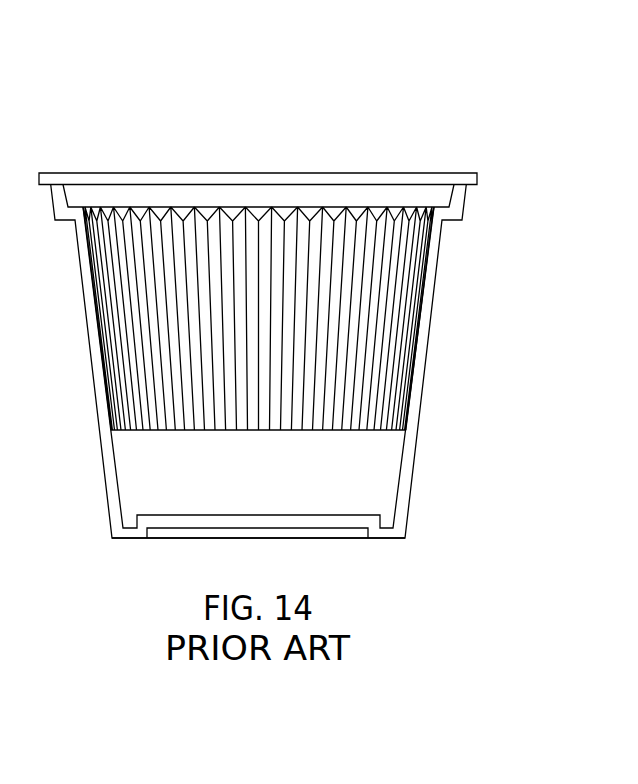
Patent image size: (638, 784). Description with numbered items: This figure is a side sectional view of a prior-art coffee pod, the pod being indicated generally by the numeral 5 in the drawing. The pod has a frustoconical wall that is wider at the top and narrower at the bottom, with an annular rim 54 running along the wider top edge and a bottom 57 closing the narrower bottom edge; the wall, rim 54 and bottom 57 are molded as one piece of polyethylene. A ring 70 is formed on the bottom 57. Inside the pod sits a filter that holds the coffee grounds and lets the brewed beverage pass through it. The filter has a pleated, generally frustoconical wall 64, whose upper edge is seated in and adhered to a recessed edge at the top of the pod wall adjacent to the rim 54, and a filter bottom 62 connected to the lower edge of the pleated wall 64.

The prior art capsule 5 is at (477, 102).
The annular rim 54 is at (478, 181).
The wall 64 is at (392, 327).
The bottom 62 is at (358, 432).
The ring 70 is at (133, 538).
The bottom 57 is at (340, 538).